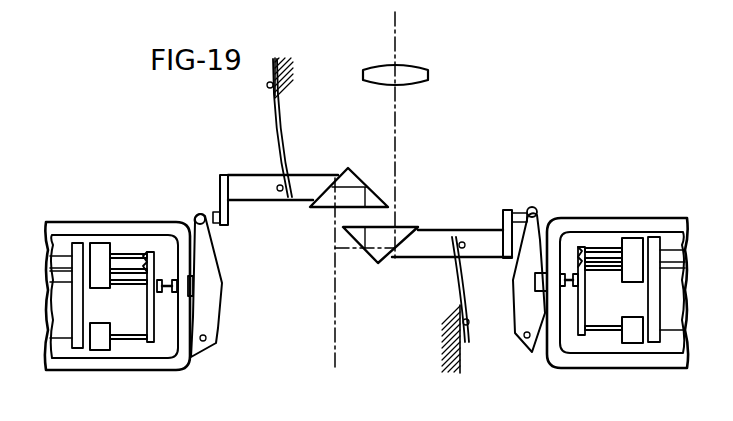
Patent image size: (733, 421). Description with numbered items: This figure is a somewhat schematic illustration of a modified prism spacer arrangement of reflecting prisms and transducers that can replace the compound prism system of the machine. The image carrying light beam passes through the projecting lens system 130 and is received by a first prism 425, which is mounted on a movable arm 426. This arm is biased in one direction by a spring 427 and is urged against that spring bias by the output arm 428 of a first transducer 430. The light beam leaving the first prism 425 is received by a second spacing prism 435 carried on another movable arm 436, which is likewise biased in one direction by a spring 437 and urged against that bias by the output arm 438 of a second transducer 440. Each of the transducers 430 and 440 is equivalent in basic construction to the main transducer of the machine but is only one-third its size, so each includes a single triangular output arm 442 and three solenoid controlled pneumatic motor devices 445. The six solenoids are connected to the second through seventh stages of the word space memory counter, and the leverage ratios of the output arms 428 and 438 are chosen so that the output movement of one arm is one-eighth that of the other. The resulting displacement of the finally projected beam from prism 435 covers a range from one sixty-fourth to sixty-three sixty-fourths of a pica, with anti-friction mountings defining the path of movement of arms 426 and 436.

The optical lens system 130 is at (416, 72).
The second spacing prism 435 is at (348, 176).
The first prism 425 is at (378, 262).
The movable arm 436 is at (240, 180).
The movable arm 426 is at (442, 235).
The spring 437 is at (273, 127).
The spring 427 is at (458, 290).
The output arm 438 is at (203, 250).
The output arm 428 is at (547, 193).
The second transducer 440 is at (118, 211).
The first transducer 430 is at (623, 211).
The triangular output arm 442 is at (150, 307).
The solenoid controlled pneumatic motor device 445 is at (98, 243).